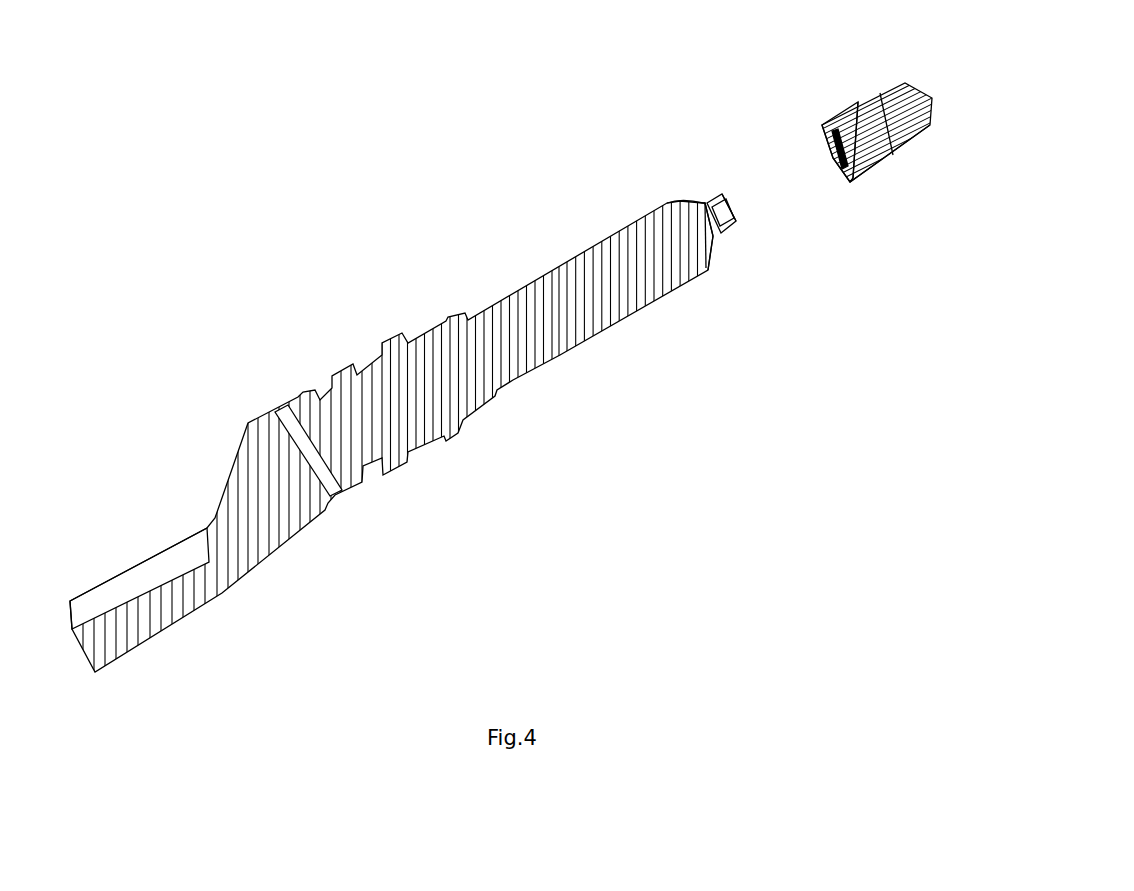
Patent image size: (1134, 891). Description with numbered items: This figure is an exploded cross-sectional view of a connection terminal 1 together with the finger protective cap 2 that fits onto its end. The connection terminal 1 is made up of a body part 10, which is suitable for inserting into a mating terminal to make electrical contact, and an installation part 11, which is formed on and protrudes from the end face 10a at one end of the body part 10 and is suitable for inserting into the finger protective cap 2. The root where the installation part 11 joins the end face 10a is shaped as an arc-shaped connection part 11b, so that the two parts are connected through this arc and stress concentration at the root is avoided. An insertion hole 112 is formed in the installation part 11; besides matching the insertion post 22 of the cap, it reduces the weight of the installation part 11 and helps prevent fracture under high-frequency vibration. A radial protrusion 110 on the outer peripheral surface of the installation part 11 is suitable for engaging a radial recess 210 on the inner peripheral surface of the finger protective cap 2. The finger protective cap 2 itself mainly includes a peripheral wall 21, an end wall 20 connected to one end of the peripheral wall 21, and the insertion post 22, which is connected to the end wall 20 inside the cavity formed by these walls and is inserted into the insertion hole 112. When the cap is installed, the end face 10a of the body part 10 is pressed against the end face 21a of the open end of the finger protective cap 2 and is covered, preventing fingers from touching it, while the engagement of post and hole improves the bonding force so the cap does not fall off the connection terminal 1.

The connection terminal 1 is at (453, 406).
The body part 10 is at (600, 325).
The end face of the body part 10a is at (688, 210).
The radial protrusion 110 is at (696, 204).
The installation part 11 is at (730, 228).
The insertion hole 112 is at (727, 212).
The arc-shaped connection part 11b is at (716, 240).
The finger protective cap 2 is at (873, 141).
The end wall 20 is at (928, 95).
The peripheral wall 21 is at (856, 99).
The end face of the open end of the finger protective cap 21a is at (821, 128).
The insertion post 22 is at (896, 150).
The radial recess 210 is at (866, 168).